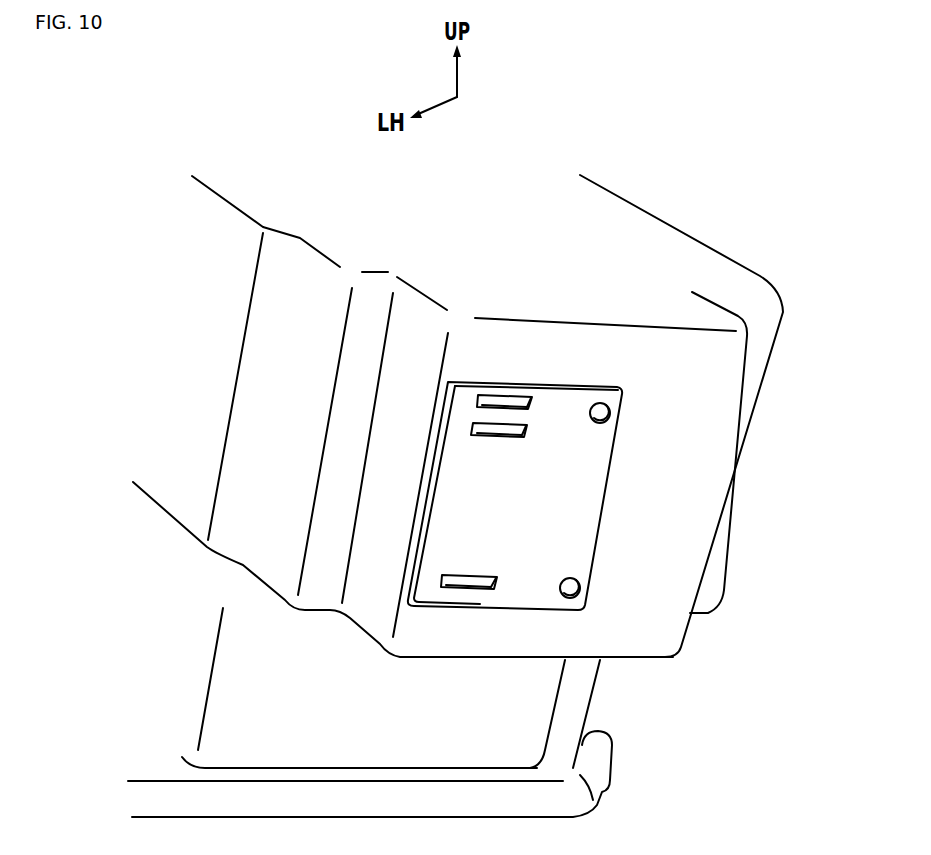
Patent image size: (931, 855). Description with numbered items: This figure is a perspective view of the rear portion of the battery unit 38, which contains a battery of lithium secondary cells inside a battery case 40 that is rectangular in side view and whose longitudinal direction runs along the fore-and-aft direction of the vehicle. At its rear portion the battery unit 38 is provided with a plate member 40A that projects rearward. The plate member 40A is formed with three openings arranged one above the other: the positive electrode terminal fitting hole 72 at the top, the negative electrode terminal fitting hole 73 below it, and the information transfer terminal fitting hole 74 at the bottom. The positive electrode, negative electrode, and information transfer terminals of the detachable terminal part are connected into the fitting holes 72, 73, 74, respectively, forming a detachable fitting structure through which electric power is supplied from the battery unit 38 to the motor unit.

The battery unit 38 is at (695, 184).
The battery case 40 is at (782, 340).
The plate member 40A is at (607, 492).
The positive electrode terminal fitting hole 72 is at (533, 400).
The negative electrode terminal fitting hole 73 is at (508, 432).
The information transfer terminal fitting hole 74 is at (478, 588).